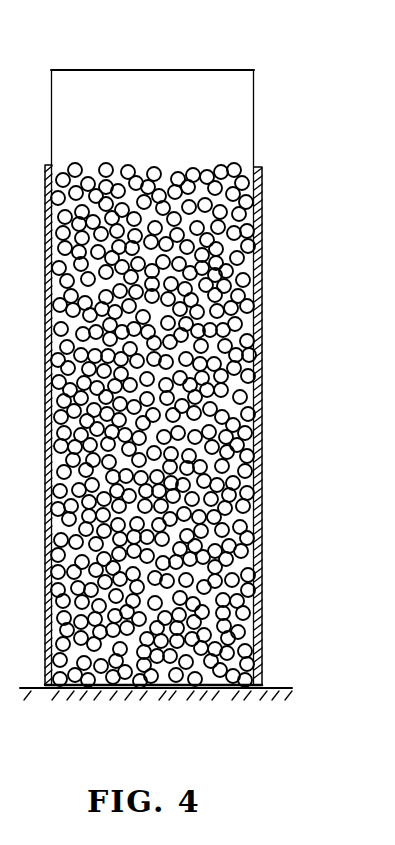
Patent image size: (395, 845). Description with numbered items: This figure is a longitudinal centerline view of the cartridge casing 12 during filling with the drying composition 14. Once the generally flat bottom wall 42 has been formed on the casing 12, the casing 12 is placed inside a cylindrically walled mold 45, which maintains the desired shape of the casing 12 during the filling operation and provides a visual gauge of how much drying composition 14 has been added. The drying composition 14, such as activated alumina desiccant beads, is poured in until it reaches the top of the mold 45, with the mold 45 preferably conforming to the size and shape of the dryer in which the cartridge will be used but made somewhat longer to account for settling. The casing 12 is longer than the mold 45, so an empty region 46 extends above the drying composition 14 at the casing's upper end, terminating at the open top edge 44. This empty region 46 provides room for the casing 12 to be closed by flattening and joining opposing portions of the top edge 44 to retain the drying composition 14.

The casing 12 is at (255, 139).
The drying composition 14 is at (183, 170).
The bottom wall 42 is at (128, 691).
The top edge 44 is at (197, 70).
The mold 45 is at (263, 195).
The empty region 46 is at (158, 119).